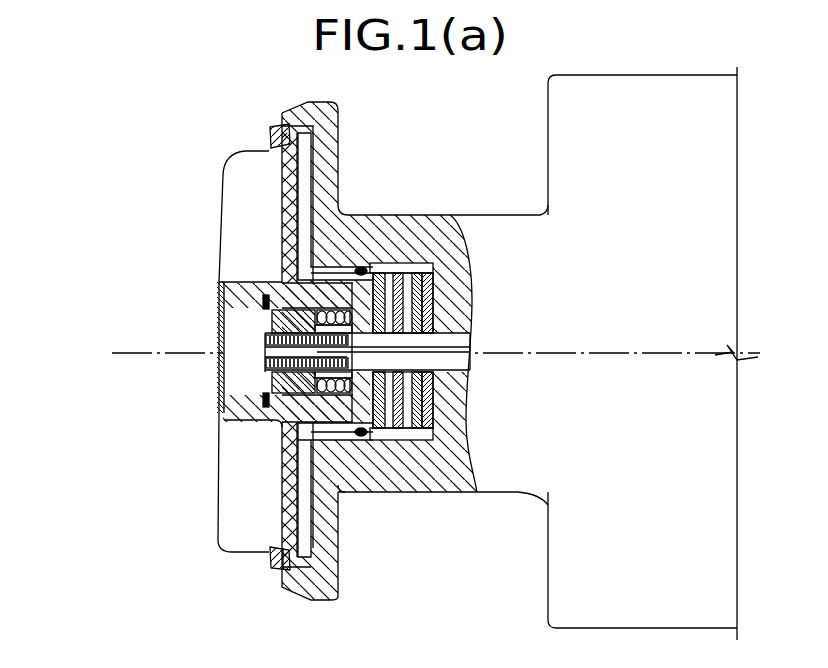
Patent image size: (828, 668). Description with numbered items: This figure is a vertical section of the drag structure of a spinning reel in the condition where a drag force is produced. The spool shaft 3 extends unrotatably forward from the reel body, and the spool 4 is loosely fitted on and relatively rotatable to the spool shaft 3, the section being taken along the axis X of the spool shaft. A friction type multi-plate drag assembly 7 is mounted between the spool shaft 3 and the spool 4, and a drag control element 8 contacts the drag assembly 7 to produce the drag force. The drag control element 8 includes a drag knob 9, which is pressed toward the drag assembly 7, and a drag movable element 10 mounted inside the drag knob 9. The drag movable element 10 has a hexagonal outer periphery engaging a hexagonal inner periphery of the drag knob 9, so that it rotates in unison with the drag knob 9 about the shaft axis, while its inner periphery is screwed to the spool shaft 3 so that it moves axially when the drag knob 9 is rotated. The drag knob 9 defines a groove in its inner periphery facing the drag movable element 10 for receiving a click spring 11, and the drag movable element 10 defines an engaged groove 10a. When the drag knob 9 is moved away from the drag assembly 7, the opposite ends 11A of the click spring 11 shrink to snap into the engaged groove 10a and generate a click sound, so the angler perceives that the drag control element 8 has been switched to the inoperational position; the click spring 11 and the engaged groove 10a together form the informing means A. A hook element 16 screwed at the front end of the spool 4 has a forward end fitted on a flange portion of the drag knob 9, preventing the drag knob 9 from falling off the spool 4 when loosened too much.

The spool shaft 3 is at (460, 328).
The spool 4 is at (508, 496).
The friction type multi-plate drag assembly 7 is at (421, 250).
The drag control element 8 is at (150, 374).
The drag knob 9 is at (219, 445).
The drag movable element 10 is at (240, 300).
The engaged groove 10a is at (303, 310).
The opposite ends of the click spring 11A is at (205, 271).
The click spring 11 is at (262, 313).
The hook element 16 is at (273, 143).
The informing means A is at (125, 194).
The axis X is at (766, 353).